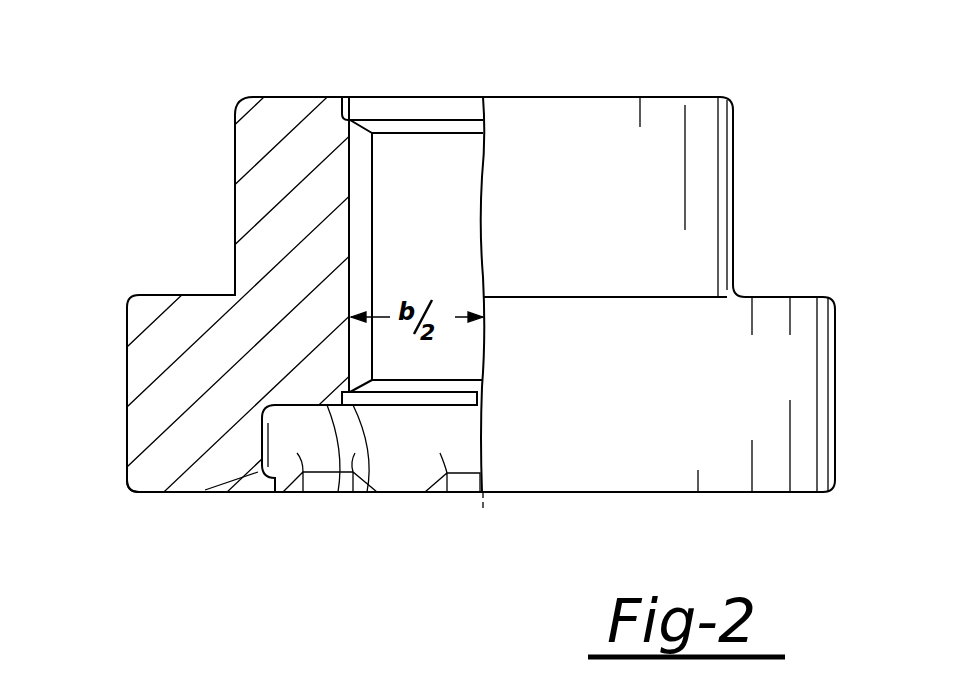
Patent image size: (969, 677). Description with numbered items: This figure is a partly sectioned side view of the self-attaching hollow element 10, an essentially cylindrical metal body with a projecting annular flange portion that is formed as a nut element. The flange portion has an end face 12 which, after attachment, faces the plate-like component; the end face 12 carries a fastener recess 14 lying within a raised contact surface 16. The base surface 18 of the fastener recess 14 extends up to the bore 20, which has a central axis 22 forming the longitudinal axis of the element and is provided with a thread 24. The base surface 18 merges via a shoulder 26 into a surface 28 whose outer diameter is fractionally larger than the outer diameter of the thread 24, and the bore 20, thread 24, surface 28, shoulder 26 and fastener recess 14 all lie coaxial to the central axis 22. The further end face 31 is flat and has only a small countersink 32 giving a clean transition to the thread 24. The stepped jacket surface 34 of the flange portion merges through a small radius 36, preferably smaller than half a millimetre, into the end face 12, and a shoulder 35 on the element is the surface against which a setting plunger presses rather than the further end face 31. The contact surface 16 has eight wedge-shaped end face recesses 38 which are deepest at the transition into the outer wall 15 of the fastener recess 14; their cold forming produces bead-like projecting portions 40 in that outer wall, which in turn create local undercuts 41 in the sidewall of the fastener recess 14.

The self-attaching hollow element 10 is at (742, 188).
The end face 12 is at (173, 493).
The fastener recess 14 is at (393, 458).
The outer wall of the fastener recess 15 is at (287, 417).
The contact surface 16 is at (146, 503).
The base surface 18 is at (410, 425).
The bore 20 is at (373, 266).
The central axis 22 is at (483, 500).
The thread 24 is at (345, 155).
The shoulder 26 is at (338, 492).
The surface 28 is at (367, 492).
The further end face 31 is at (655, 97).
The countersink 32 is at (370, 105).
The stepped jacket surface 34 is at (125, 340).
The shoulder of the hollow element 35 is at (200, 296).
The radius 36 is at (127, 492).
The end face recesses 38 is at (310, 490).
The projecting portions 40 is at (265, 450).
The undercuts 41 is at (262, 410).